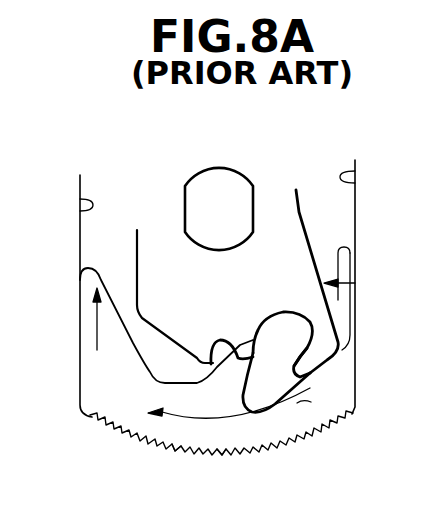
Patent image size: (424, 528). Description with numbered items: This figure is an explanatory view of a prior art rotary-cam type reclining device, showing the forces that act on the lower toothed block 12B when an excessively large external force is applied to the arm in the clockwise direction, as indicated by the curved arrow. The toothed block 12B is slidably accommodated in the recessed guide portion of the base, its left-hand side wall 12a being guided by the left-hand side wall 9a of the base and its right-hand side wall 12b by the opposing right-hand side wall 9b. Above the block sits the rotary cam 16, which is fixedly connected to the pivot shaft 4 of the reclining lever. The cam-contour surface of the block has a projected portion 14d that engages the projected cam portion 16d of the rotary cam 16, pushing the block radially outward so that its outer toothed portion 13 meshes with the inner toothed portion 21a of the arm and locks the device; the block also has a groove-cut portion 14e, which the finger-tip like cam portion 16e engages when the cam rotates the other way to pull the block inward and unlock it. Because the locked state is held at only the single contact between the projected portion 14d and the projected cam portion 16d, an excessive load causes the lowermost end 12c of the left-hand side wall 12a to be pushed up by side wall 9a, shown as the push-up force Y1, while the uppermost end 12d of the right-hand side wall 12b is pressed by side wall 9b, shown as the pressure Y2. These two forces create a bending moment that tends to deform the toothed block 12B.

The pivot shaft 4 is at (197, 192).
The left-hand side wall 9a is at (79, 207).
The right-hand side wall 9b is at (355, 170).
The left-hand side wall 12a is at (80, 278).
The right-hand side wall 12b is at (345, 303).
The lowermost end 12c is at (80, 396).
The uppermost end 12d is at (349, 257).
The toothed block 12B is at (225, 448).
The outer toothed portion 13 is at (140, 440).
The projected portion 14d is at (213, 348).
The groove-cut portion 14e is at (265, 397).
The rotary cam 16 is at (280, 208).
The projected cam portion 16d is at (253, 362).
The finger-tip like cam portion 16e is at (298, 366).
The inner toothed portion 21a is at (178, 452).
The push-up force Y1 is at (97, 328).
The pressure Y2 is at (355, 283).